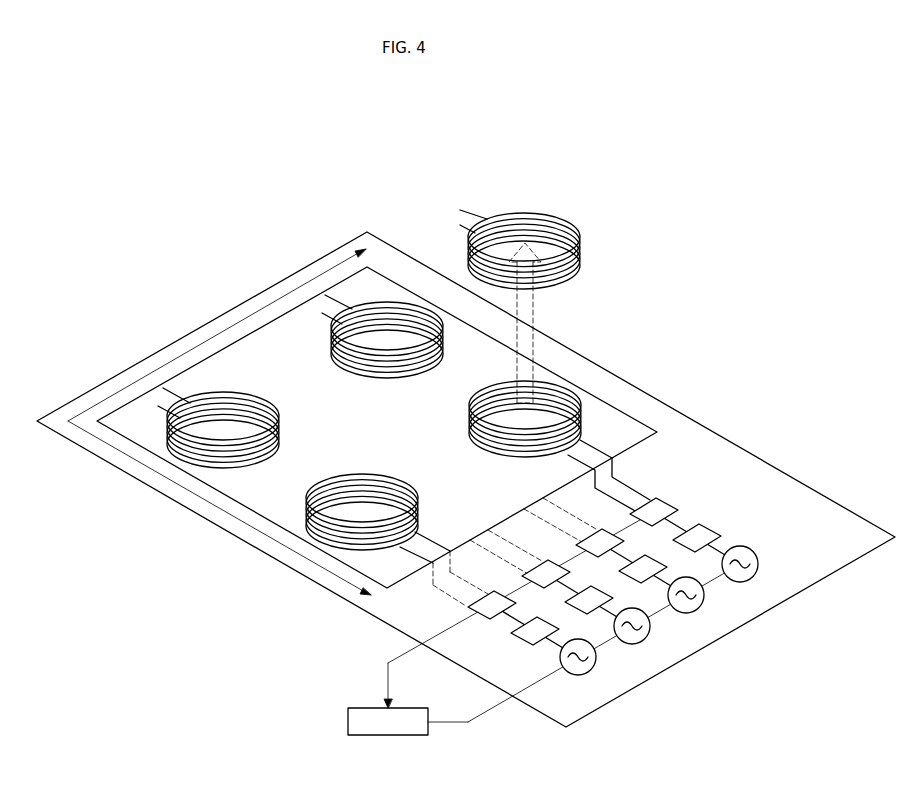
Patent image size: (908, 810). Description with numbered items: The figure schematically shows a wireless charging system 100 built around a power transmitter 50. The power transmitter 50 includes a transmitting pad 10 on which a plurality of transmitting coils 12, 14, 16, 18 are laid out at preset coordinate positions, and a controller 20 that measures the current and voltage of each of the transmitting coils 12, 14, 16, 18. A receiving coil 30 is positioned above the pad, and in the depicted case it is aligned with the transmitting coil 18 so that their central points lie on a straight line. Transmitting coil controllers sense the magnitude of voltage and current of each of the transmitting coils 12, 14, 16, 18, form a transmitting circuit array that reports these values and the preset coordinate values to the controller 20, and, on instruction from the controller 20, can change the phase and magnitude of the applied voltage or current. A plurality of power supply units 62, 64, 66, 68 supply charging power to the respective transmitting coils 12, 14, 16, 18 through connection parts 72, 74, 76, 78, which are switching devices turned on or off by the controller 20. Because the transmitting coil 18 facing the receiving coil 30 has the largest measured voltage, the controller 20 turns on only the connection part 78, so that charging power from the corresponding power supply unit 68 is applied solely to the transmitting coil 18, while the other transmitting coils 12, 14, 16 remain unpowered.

The wireless charging system 100 is at (737, 238).
The transmitting pad 10 is at (633, 413).
The transmitting coil 12 is at (210, 392).
The transmitting coil 14 is at (307, 537).
The transmitting coil 16 is at (338, 325).
The transmitting coil 18 is at (567, 388).
The controller 20 is at (348, 722).
The receiving coil 30 is at (582, 237).
The power transmitter 50 is at (715, 431).
The power supply unit 62 is at (578, 676).
The power supply unit 64 is at (665, 632).
The power supply unit 66 is at (708, 596).
The power supply unit 68 is at (767, 567).
The connection part 72 is at (513, 644).
The connection part 74 is at (588, 613).
The connection part 76 is at (660, 556).
The connection part 78 is at (712, 524).